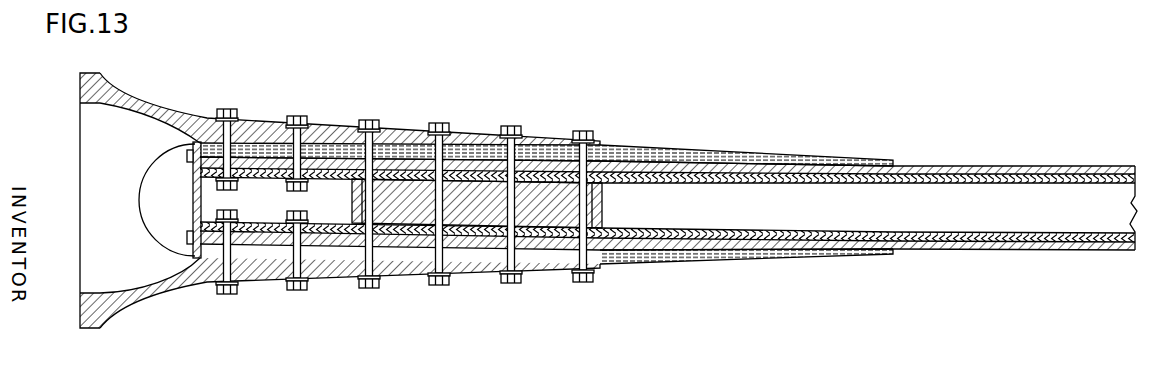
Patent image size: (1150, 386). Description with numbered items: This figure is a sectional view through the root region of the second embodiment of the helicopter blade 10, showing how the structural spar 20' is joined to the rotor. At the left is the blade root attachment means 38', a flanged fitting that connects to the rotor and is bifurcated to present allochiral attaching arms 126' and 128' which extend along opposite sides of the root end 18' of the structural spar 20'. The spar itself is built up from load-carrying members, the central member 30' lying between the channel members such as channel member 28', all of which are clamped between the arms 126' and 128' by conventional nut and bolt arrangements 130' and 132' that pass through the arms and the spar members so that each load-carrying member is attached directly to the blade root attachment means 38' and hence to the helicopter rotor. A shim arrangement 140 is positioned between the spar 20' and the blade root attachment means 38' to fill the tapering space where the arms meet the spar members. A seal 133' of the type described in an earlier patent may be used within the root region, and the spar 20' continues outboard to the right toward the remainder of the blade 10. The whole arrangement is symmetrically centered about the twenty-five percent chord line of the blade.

The blade root attachment means 38' is at (124, 189).
The attaching arm 126' is at (350, 100).
The attaching arm 128' is at (350, 297).
The nut and bolt arrangement 130' is at (330, 179).
The nut and bolt arrangement 132' is at (398, 177).
The root end of structural spar 18' is at (400, 121).
The seal 133' is at (477, 154).
The shim arrangement 140 is at (649, 157).
The central member 30' is at (546, 178).
The channel member 28' is at (546, 174).
The structural spar 20' is at (1015, 185).
The helicopter blade 10 is at (861, 129).